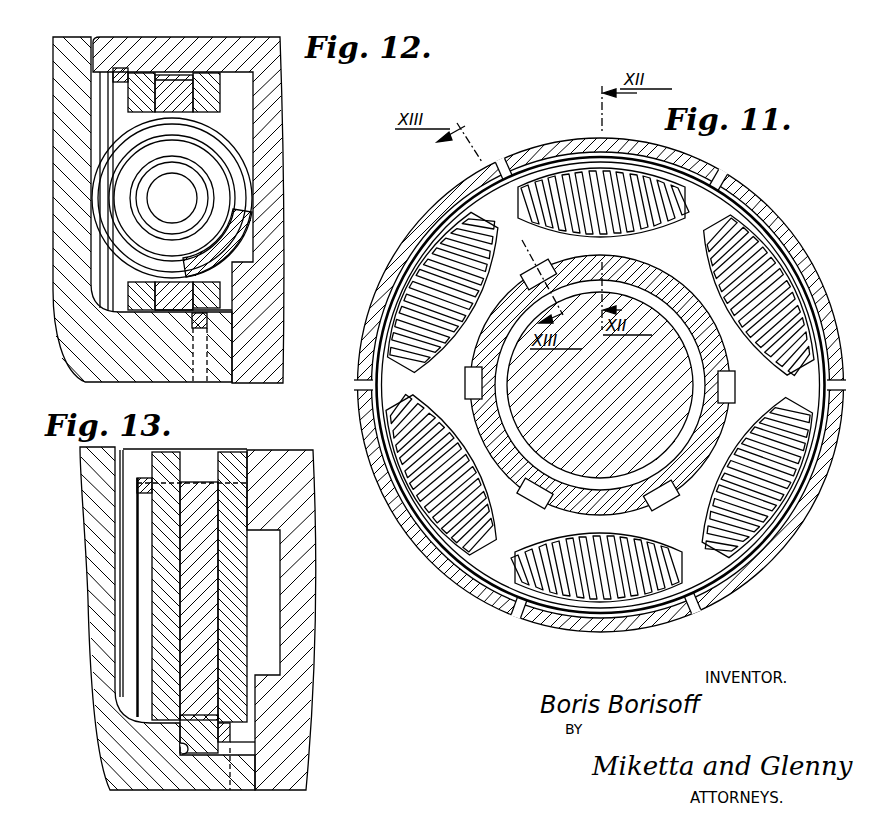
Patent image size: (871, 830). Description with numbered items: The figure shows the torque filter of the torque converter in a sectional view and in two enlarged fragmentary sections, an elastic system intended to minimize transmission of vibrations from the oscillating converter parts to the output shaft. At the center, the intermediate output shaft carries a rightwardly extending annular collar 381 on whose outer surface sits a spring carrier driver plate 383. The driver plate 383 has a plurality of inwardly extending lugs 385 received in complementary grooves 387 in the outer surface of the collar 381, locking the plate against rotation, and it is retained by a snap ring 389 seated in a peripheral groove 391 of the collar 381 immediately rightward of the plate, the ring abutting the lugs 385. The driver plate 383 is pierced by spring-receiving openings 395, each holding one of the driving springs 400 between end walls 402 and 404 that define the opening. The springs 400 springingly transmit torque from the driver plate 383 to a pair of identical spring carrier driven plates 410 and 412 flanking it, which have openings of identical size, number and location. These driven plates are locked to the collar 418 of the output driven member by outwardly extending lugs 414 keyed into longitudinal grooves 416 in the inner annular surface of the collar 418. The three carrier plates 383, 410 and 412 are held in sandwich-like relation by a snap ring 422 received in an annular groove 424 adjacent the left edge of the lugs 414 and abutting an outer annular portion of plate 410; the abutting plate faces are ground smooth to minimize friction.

In FIG. 11, the annular collar 381 is at (700, 415).
In FIG. 12, the annular collar 381 is at (235, 310).
In FIG. 11, the spring carrier driver plate 383 is at (532, 528).
In FIG. 12, the spring carrier driver plate 383 is at (181, 66).
In FIG. 13, the spring carrier driver plate 383 is at (225, 577).
In FIG. 11, the inwardly extending lugs 385 is at (660, 481).
In FIG. 13, the inwardly extending lugs 385 is at (190, 737).
In FIG. 13, the grooves 387 is at (185, 750).
In FIG. 12, the snap ring 389 is at (207, 322).
In FIG. 13, the snap ring 389 is at (232, 733).
In FIG. 12, the peripheral groove 391 is at (205, 353).
In FIG. 13, the peripheral groove 391 is at (228, 771).
In FIG. 11, the spring-receiving openings 395 is at (715, 500).
In FIG. 12, the spring-receiving openings 395 is at (182, 116).
In FIG. 11, the driving springs 400 is at (772, 262).
In FIG. 12, the driving springs 400 is at (246, 174).
In FIG. 11, the end wall 402 is at (523, 598).
In FIG. 11, the end wall 404 is at (688, 600).
In FIG. 11, the spring carrier driven plate 410 is at (664, 245).
In FIG. 12, the spring carrier driven plate 410 is at (140, 64).
In FIG. 13, the spring carrier driven plate 410 is at (146, 588).
In FIG. 12, the spring carrier driven plate 412 is at (212, 66).
In FIG. 13, the spring carrier driven plate 412 is at (255, 621).
In FIG. 11, the outwardly extending lugs 414 is at (480, 165).
In FIG. 13, the outwardly extending lugs 414 is at (174, 462).
In FIG. 11, the longitudinal grooves 416 is at (496, 160).
In FIG. 13, the longitudinal grooves 416 is at (124, 463).
In FIG. 11, the collar 418 is at (428, 221).
In FIG. 12, the collar 418 is at (160, 43).
In FIG. 12, the snap ring 422 is at (103, 70).
In FIG. 13, the snap ring 422 is at (143, 485).
In FIG. 13, the annular groove 424 is at (143, 520).